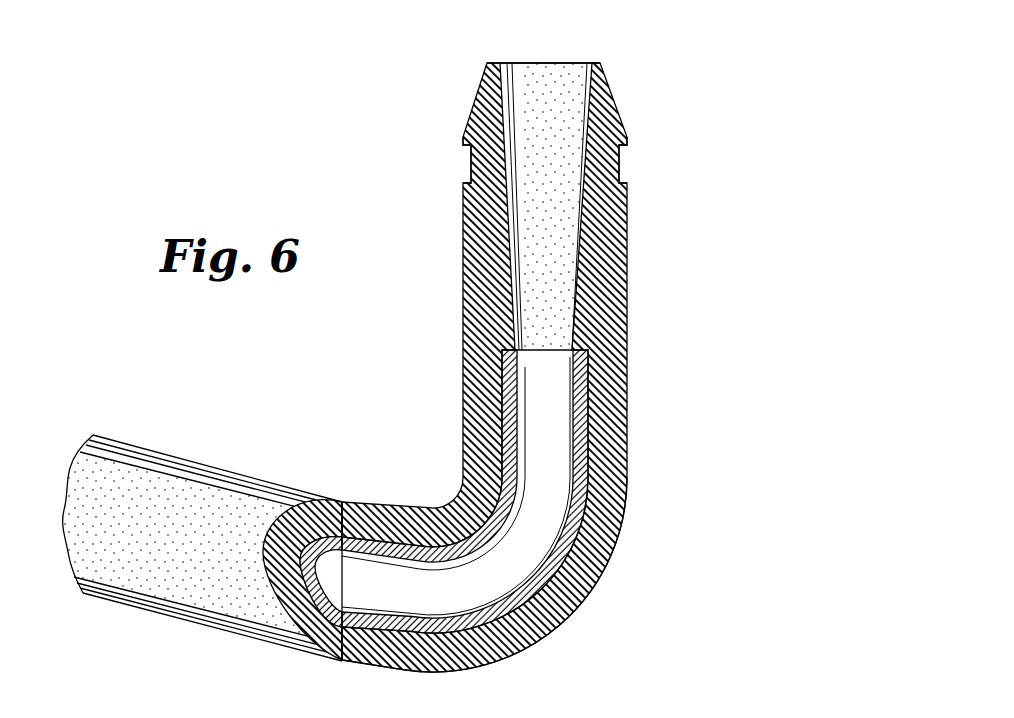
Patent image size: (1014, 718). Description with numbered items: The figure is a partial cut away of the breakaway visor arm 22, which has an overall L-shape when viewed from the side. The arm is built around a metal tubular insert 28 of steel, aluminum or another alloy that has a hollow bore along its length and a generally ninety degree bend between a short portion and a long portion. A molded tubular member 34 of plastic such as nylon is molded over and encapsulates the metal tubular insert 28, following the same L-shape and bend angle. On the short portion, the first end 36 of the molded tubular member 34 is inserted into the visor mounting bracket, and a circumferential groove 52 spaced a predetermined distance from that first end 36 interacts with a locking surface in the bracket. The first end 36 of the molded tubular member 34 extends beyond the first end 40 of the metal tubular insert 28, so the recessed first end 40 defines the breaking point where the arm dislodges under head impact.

The breakaway visor arm 22 is at (406, 341).
The metal tubular insert 28 is at (627, 466).
The molded tubular member 34 is at (620, 313).
The first end of the molded tubular member 36 is at (599, 63).
The first end of the metal tubular insert 40 is at (585, 349).
The circumferential groove 52 is at (622, 168).